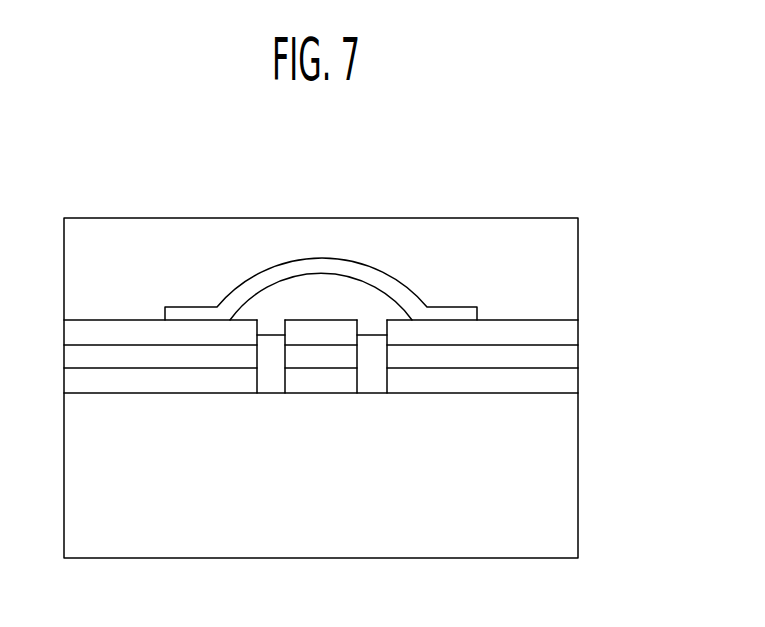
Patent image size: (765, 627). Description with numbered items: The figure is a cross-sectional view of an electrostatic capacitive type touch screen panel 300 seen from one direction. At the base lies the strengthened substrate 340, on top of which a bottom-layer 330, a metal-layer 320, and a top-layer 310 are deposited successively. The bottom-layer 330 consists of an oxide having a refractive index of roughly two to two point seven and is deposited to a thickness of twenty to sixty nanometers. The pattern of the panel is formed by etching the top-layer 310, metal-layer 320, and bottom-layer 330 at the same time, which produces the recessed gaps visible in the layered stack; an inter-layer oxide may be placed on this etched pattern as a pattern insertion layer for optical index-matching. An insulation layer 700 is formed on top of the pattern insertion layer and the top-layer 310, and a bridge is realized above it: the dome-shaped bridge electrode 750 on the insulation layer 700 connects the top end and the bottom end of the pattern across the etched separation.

The electrostatic capacitive type touch screen panel 300 is at (590, 272).
The top-layer 310 is at (590, 332).
The metal-layer 320 is at (590, 355).
The bottom-layer 330 is at (590, 382).
The strengthened substrate 340 is at (590, 487).
The insulation layer 700 is at (309, 292).
The bridge electrode 750 is at (352, 252).